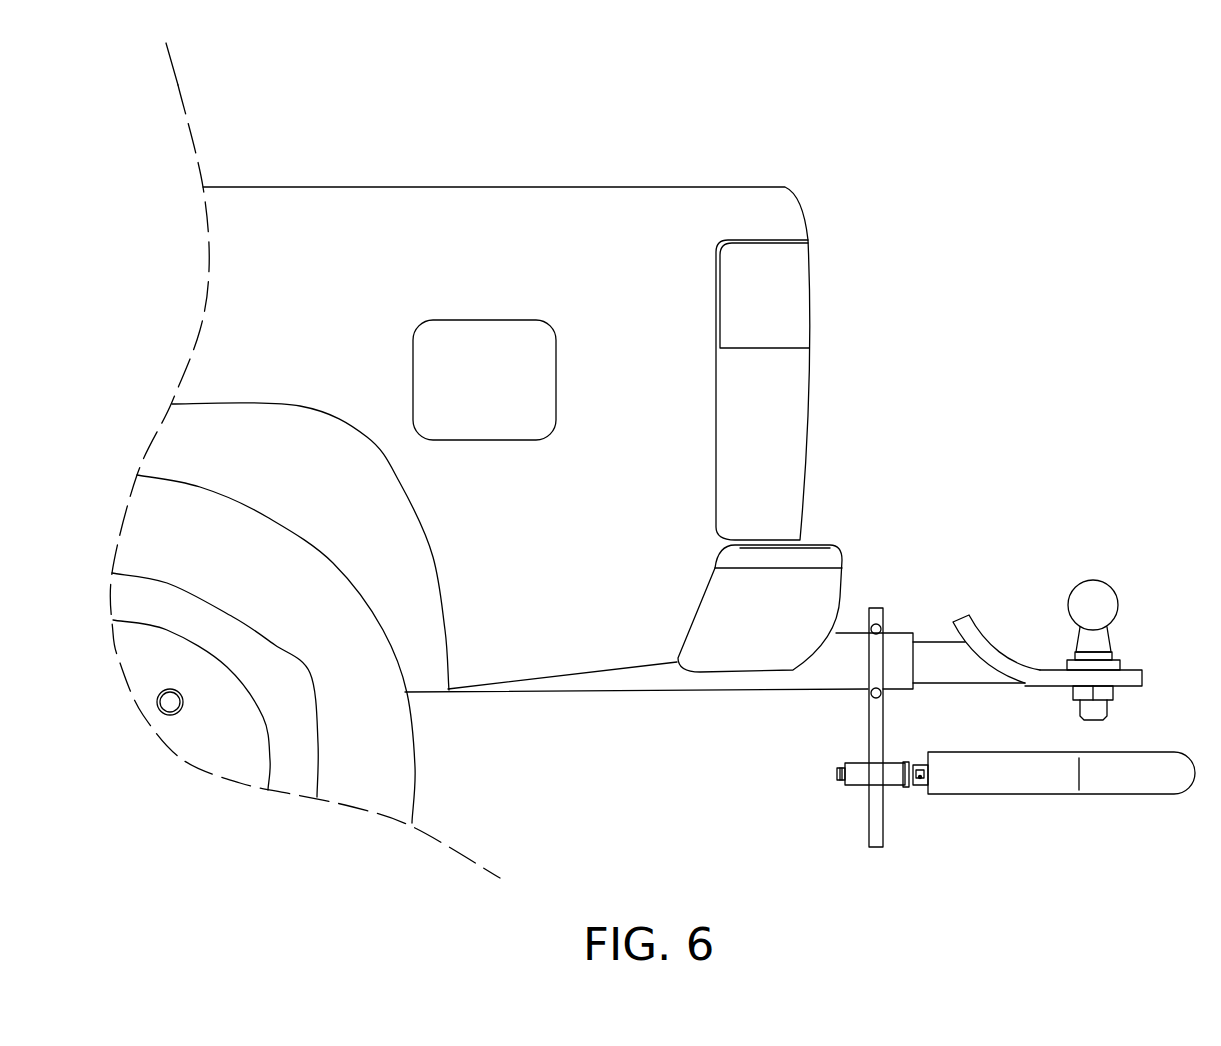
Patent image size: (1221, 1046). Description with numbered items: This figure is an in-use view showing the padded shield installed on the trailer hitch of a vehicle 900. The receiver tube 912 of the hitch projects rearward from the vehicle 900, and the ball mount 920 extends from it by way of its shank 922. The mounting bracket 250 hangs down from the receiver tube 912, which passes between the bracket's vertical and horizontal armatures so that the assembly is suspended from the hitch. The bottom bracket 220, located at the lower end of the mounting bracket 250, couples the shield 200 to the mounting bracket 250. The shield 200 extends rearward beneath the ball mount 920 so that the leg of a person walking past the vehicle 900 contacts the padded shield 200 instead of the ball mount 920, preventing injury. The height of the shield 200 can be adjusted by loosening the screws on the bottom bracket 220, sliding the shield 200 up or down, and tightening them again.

The vehicle 900 is at (597, 237).
The receiver tube 912 is at (828, 690).
The ball mount 920 is at (1142, 560).
The shank 922 is at (942, 672).
The shield 200 is at (990, 783).
The bottom bracket 220 is at (863, 783).
The mounting bracket 250 is at (877, 833).